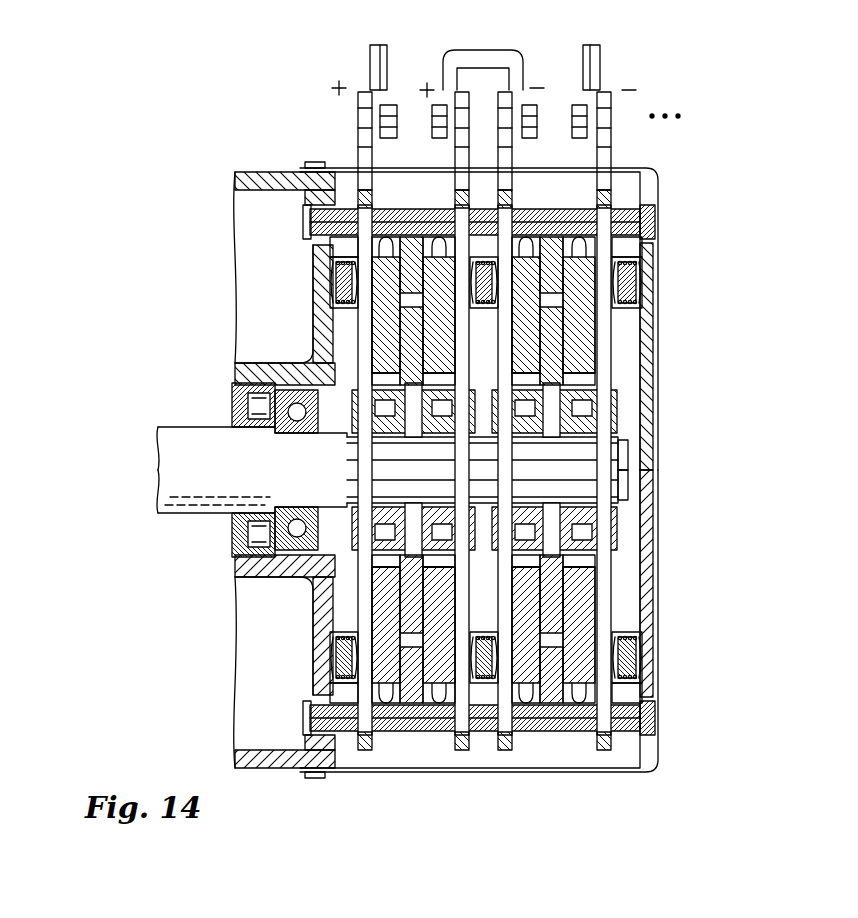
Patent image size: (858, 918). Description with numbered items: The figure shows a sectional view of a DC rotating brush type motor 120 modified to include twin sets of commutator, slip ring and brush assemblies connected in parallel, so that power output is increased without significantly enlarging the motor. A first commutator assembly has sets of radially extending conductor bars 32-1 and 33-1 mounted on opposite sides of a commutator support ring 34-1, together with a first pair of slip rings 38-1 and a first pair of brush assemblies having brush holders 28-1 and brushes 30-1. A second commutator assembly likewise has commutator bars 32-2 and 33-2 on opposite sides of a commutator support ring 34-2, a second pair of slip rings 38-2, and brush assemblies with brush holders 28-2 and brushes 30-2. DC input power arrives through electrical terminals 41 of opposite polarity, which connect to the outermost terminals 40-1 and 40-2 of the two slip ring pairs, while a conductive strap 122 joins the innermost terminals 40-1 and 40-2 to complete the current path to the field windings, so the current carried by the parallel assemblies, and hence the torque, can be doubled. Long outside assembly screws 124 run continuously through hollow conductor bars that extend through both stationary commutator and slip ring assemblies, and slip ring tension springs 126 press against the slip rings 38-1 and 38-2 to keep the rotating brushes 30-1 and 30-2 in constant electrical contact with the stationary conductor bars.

The motor 120 is at (762, 272).
The conductive strap 122 is at (471, 58).
The outside assembly screws 124 is at (650, 223).
The slip ring tension springs 126 is at (340, 283).
The electrical terminals 41 is at (370, 53).
The terminals of the first pair of slip rings 40-1 is at (453, 163).
The terminals of the second pair of slip rings 40-2 is at (513, 163).
The first pair of slip rings 38-1 is at (345, 240).
The second pair of slip rings 38-2 is at (615, 238).
The conductor bars 32-1 is at (395, 323).
The commutator bars 32-2 is at (570, 327).
The commutator support ring 34-1 is at (410, 340).
The commutator support ring 34-2 is at (553, 340).
The conductor bars 33-1 is at (430, 353).
The commutator bars 33-2 is at (538, 353).
The brushes 30-1 is at (392, 592).
The brushes 30-2 is at (522, 597).
The brush holders 28-1 is at (440, 717).
The brush holders 28-2 is at (524, 703).